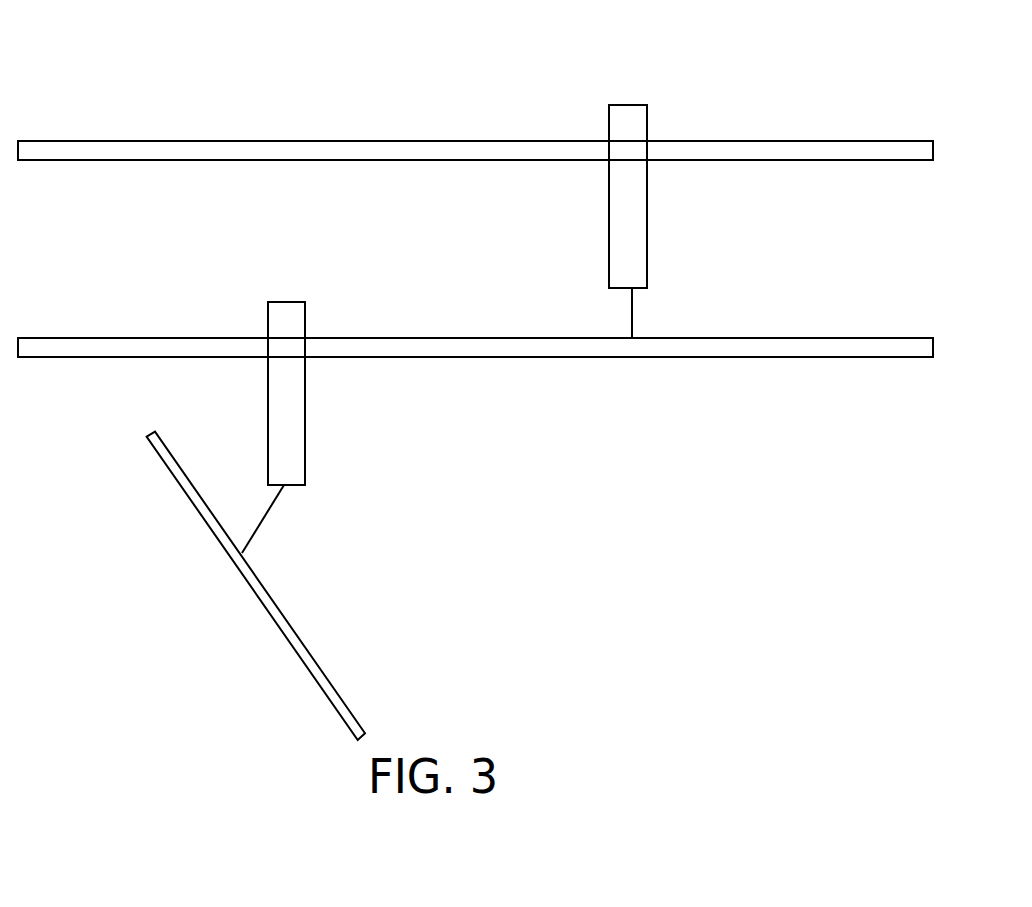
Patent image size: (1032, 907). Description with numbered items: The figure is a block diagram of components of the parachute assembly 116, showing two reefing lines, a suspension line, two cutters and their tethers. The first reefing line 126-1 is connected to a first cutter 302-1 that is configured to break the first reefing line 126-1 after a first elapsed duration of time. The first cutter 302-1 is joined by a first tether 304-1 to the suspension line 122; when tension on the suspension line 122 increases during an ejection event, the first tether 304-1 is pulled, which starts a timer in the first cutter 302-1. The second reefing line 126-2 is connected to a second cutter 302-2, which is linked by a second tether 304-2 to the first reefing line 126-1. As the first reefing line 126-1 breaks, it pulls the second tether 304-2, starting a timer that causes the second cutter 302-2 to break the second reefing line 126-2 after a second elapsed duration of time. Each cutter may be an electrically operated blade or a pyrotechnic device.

The parachute assembly 116 is at (306, 66).
The first reefing line 126-1 is at (422, 343).
The second reefing line 126-2 is at (768, 147).
The first cutter 302-1 is at (306, 318).
The second cutter 302-2 is at (647, 122).
The first tether 304-1 is at (277, 502).
The second tether 304-2 is at (632, 327).
The suspension line 122 is at (310, 670).